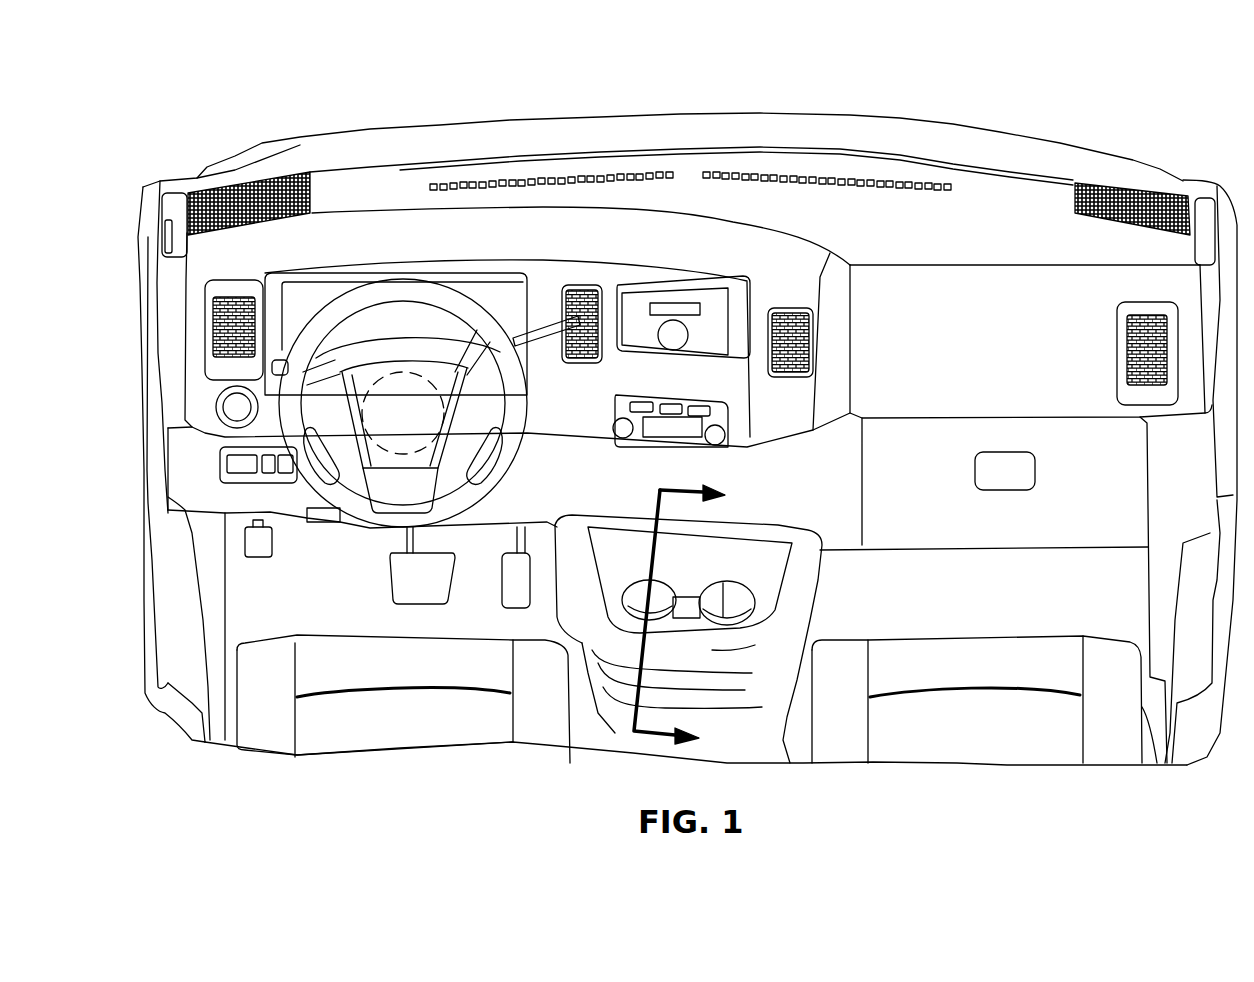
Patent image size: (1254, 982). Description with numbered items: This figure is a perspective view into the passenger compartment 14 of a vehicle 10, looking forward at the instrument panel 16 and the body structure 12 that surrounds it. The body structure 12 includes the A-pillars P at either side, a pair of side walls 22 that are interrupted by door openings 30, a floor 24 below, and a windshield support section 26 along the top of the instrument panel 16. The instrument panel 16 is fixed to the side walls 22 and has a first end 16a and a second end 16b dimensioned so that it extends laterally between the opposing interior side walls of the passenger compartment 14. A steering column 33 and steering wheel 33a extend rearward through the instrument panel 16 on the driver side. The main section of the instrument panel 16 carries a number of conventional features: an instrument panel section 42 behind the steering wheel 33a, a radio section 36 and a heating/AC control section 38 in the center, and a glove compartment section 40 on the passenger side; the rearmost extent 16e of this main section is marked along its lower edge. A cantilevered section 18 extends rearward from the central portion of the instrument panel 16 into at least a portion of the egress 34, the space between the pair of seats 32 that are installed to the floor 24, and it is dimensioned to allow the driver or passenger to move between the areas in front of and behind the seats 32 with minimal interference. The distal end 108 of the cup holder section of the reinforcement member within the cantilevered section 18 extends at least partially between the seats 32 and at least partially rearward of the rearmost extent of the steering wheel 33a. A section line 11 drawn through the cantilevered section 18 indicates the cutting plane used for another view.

The vehicle 10 is at (328, 105).
The section line 11- 11 is at (696, 621).
The body structure 12 is at (200, 623).
The passenger compartment 14 is at (248, 591).
The instrument panel 16 is at (970, 197).
The first end 16a is at (157, 333).
The second end 16b is at (1217, 320).
The rearmost extent 16e is at (985, 550).
The cantilevered section 18 is at (697, 693).
The side walls 22 is at (157, 645).
The floor 24 is at (617, 743).
The windshield support section 26 is at (530, 157).
The door openings 30 is at (157, 443).
The seats 32 is at (403, 633).
The steering column 33 is at (443, 438).
The steering wheel 33a is at (357, 290).
The egress 34 is at (603, 723).
The radio section 36 is at (638, 297).
The heating/AC control section 38 is at (613, 400).
The glove compartment section 40 is at (960, 418).
The instrument panel section 42 is at (530, 273).
The distal end 108 is at (745, 675).
The A-pillars P is at (197, 185).